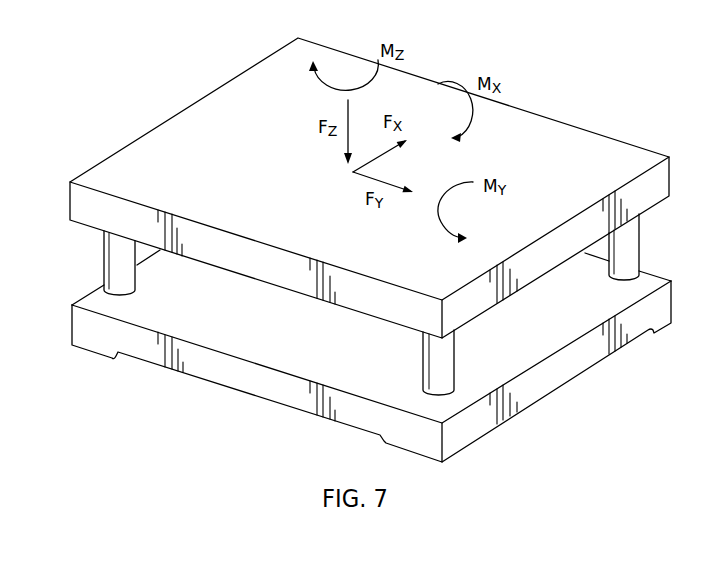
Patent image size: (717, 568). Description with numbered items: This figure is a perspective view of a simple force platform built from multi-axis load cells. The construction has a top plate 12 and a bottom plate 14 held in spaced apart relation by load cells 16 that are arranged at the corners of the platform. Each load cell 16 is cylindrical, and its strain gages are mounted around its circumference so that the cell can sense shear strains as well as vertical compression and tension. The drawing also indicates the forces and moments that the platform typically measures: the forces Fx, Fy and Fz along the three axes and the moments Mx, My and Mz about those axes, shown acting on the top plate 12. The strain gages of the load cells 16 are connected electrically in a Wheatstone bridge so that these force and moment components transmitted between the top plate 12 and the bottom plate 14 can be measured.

The top plate 12 is at (598, 156).
The bottom plate 14 is at (583, 355).
The load cells 16 is at (102, 258).